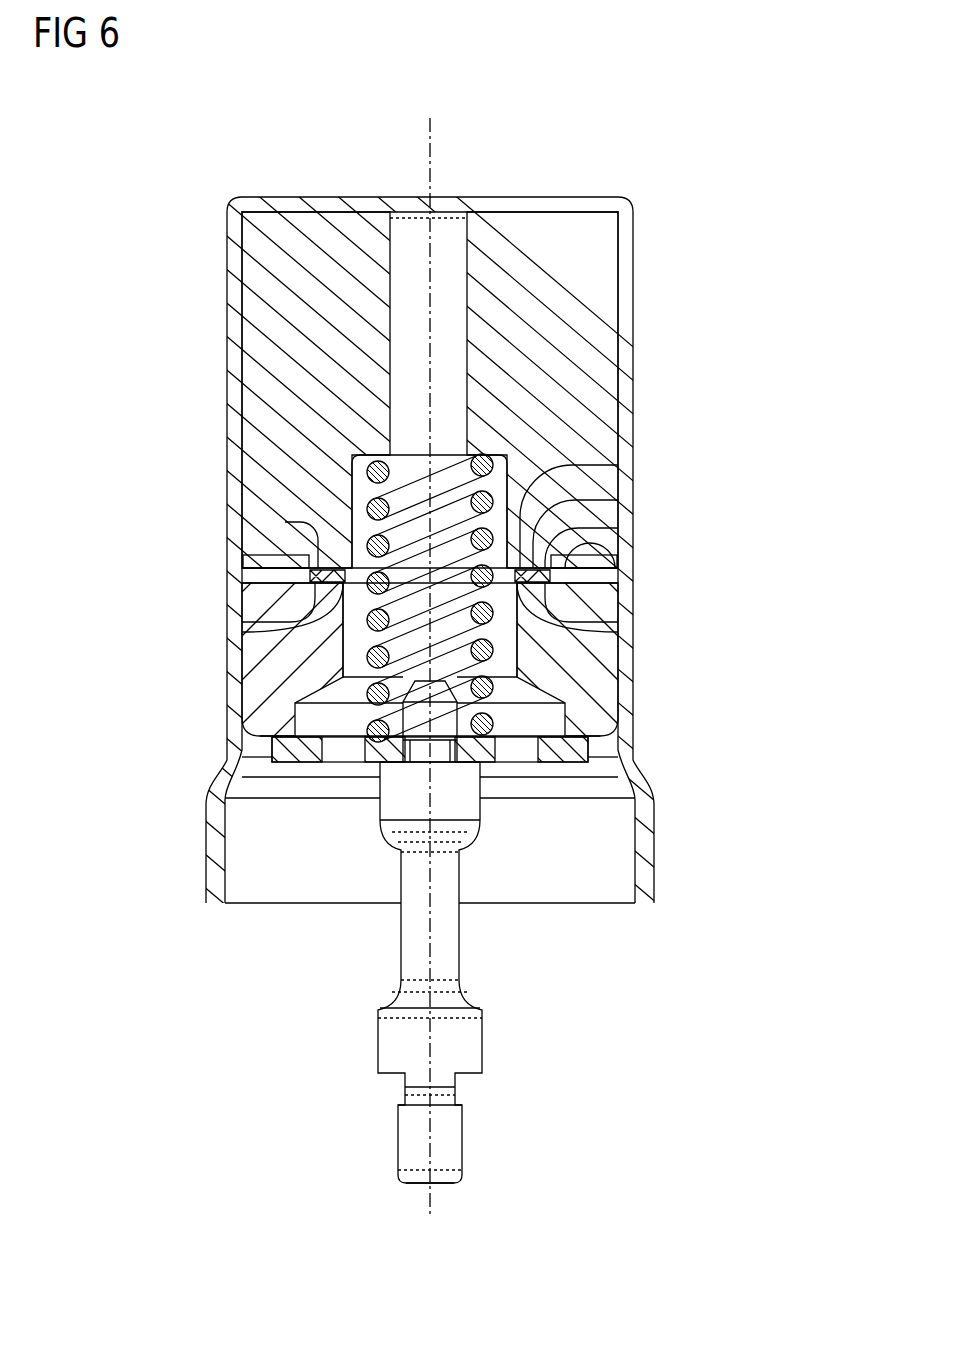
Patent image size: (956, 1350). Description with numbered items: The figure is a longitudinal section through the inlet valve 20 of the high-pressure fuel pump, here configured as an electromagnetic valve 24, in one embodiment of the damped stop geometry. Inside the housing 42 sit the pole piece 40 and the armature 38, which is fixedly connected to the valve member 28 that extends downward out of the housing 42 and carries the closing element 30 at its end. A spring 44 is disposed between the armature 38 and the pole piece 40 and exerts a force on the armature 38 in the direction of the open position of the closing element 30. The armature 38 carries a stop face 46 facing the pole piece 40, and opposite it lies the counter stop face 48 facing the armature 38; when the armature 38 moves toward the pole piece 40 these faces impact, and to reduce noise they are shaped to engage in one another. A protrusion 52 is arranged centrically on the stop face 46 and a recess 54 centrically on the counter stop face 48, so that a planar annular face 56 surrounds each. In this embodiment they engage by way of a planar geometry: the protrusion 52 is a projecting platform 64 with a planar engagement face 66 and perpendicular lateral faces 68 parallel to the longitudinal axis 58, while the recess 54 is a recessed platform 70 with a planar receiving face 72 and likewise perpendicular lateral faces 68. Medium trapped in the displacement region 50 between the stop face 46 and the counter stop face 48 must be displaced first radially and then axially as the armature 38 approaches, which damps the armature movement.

The inlet valve 20 is at (472, 637).
The electromagnetic valve 24 is at (472, 637).
The valve member 28 is at (452, 1044).
The closing element 30 is at (437, 1185).
The armature 38 is at (300, 665).
The pole piece 40 is at (577, 283).
The housing 42 is at (311, 210).
The spring 44 is at (352, 457).
The stop face 46 is at (287, 522).
The counter stop face 48 is at (300, 600).
The displacement region 50 is at (617, 500).
The protrusion 52 is at (617, 528).
The recess 54 is at (560, 652).
The planar annular face 56 is at (616, 553).
The longitudinal axis 58 is at (430, 118).
The projecting platform 64 is at (617, 463).
The planar engagement face 66 is at (300, 626).
The perpendicular lateral faces 68 is at (300, 568).
The recessed platform 70 is at (520, 678).
The planar receiving face 72 is at (560, 623).